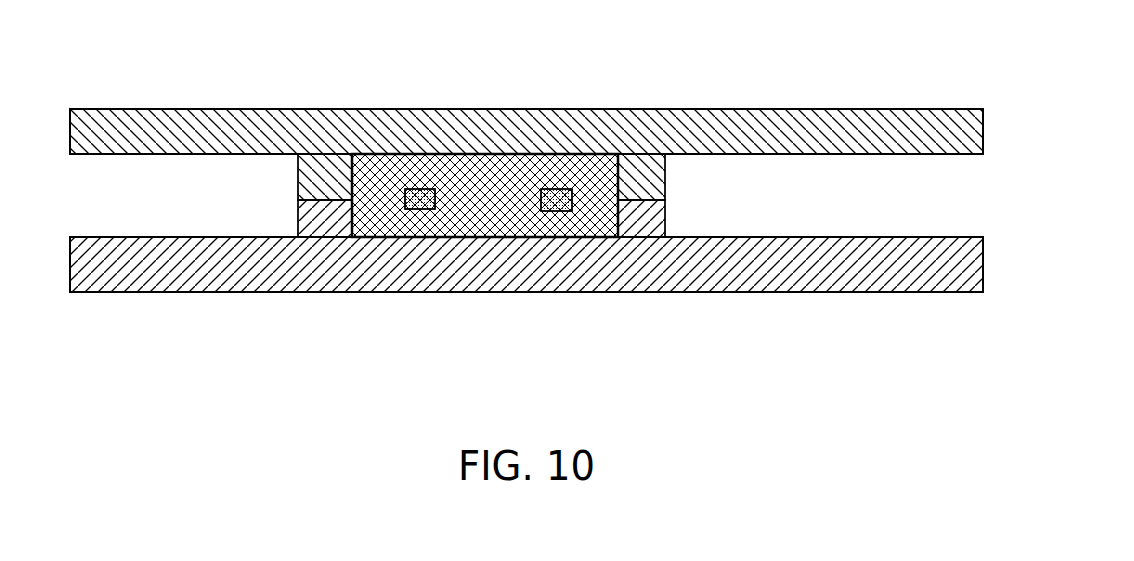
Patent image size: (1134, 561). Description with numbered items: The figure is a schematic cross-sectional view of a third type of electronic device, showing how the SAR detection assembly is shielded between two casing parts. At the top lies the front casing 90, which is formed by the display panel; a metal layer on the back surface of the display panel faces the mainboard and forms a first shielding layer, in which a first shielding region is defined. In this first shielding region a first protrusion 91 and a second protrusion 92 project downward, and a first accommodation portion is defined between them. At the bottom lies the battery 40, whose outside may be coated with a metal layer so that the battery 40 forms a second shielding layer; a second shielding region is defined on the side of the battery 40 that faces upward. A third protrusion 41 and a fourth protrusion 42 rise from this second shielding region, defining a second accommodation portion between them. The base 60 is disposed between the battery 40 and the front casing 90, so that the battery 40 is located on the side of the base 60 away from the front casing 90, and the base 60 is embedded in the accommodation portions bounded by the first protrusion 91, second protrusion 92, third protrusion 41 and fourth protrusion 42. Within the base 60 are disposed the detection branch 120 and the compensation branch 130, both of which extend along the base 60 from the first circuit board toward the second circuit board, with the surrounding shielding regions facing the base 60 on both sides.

The front casing 90 is at (762, 128).
The battery 40 is at (767, 275).
The first protrusion 91 is at (333, 167).
The third protrusion 41 is at (322, 223).
The second protrusion 92 is at (640, 168).
The fourth protrusion 42 is at (652, 224).
The base 60 is at (492, 195).
The detection branch 120 is at (417, 198).
The compensation branch 130 is at (570, 198).